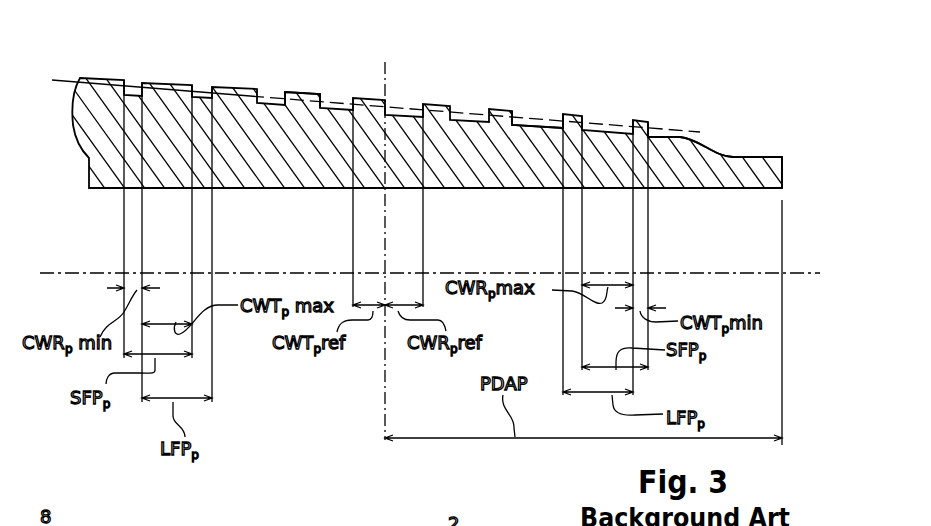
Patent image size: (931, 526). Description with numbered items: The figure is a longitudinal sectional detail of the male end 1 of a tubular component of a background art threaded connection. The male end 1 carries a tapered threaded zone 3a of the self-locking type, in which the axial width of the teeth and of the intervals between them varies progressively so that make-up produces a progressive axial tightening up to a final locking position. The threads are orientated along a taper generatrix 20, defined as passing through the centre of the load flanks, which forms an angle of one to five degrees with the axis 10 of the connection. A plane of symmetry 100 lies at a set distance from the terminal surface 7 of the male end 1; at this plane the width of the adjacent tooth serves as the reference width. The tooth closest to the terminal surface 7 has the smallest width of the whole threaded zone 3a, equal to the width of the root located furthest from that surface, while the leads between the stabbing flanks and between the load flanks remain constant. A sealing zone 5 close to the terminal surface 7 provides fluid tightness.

The male end 1 is at (99, 103).
The tapered threaded zone 3a is at (305, 74).
The plane of symmetry 100 is at (385, 75).
The taper generatrix 20 is at (523, 118).
The sealing zone 5 is at (716, 150).
The terminal surface 7 is at (782, 166).
The axis 10 is at (68, 273).